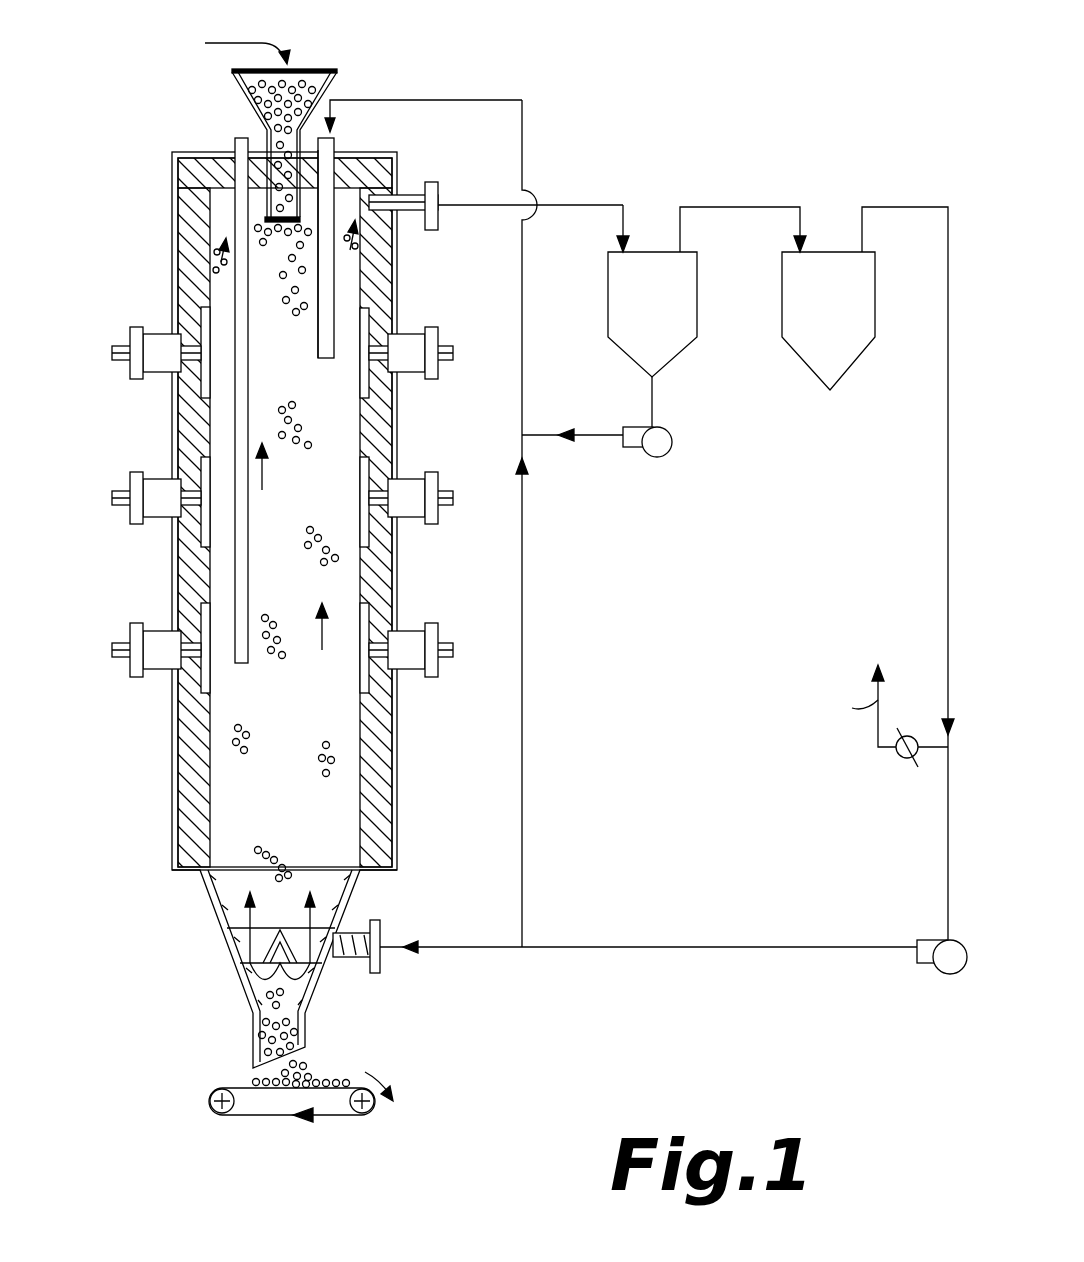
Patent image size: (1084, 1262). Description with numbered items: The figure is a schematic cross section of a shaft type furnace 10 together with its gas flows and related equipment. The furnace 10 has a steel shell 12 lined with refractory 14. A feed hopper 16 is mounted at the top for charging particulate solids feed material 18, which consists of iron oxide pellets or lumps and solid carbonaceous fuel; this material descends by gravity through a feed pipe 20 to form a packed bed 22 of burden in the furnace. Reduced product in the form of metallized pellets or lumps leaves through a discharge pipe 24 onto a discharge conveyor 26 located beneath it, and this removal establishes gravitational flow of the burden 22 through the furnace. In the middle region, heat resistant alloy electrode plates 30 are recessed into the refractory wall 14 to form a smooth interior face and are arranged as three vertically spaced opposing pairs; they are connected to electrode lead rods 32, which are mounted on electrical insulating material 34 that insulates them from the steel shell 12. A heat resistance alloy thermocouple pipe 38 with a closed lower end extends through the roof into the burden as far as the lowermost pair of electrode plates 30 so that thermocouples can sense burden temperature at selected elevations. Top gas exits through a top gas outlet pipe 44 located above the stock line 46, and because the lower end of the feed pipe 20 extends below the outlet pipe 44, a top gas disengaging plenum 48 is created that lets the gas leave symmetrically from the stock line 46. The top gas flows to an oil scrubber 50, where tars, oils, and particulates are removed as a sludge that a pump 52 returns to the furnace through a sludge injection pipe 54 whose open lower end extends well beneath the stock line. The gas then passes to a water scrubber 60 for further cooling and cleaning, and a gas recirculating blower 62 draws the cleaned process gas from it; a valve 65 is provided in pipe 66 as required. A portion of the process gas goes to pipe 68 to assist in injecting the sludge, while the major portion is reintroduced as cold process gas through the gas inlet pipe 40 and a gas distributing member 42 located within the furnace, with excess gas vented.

The shaft type furnace 10 is at (335, 610).
The steel shell 12 is at (408, 302).
The refractory 14 is at (382, 322).
The feed hopper 16 is at (337, 82).
The particulate solids feed material 18 is at (292, 85).
The feed pipe 20 is at (304, 142).
The packed bed 22 is at (326, 504).
The discharge pipe 24 is at (253, 1042).
The discharge conveyor 26 is at (330, 1115).
The electrode plates 30 is at (205, 610).
The electrode lead rods 32 is at (283, 514).
The electrical insulating material 34 is at (128, 492).
The thermocouple pipe 38 is at (228, 298).
The gas inlet pipe 40 is at (372, 920).
The gas distributing member 42 is at (268, 927).
The top gas outlet pipe 44 is at (400, 196).
The stock line 46 is at (306, 233).
The top gas disengaging plenum 48 is at (220, 222).
The oil scrubber 50 is at (680, 358).
The pump 52 is at (672, 447).
The sludge injection pipe 54 is at (342, 312).
The water scrubber 60 is at (845, 375).
The gas recirculating blower 62 is at (945, 977).
The valve 65 is at (897, 765).
The pipe 66 is at (892, 750).
The pipe 68 is at (522, 705).